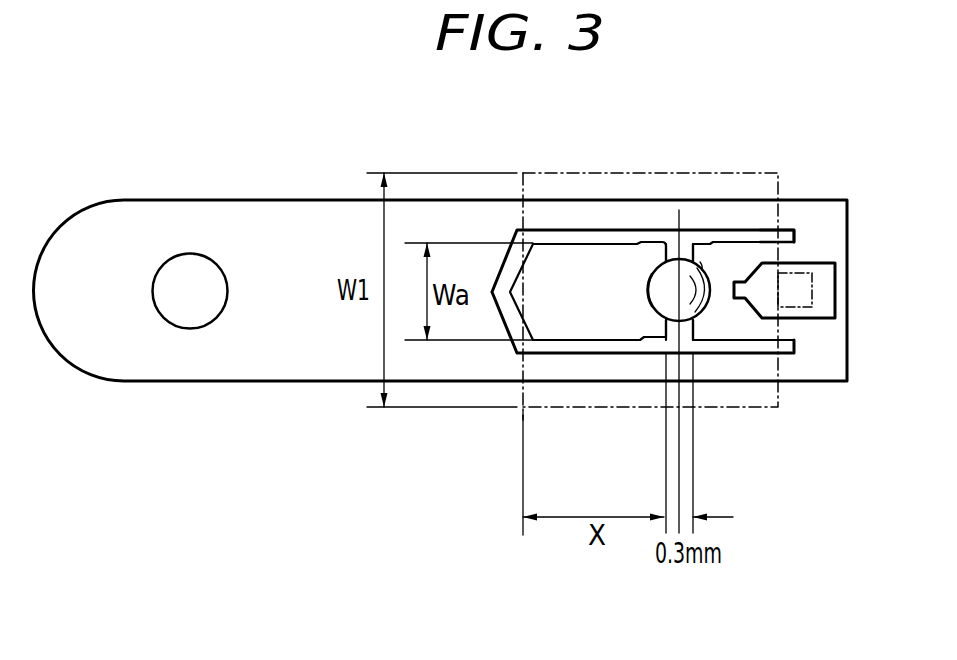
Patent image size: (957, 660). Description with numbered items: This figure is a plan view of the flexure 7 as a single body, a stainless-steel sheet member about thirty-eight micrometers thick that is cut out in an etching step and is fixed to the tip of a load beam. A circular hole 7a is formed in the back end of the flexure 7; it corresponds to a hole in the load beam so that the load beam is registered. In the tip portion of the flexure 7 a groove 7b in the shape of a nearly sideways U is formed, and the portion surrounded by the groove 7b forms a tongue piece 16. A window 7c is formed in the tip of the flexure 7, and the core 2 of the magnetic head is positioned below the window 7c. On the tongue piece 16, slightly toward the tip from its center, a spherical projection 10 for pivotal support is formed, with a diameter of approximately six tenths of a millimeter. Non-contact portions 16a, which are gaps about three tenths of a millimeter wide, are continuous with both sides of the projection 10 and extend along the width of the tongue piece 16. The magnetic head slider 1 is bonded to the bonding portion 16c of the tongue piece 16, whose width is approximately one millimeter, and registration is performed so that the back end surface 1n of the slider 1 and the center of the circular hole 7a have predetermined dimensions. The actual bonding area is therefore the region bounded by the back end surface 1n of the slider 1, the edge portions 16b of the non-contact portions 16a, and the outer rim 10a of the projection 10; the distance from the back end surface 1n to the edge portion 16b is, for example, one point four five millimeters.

The slider 1 is at (555, 163).
The back end surface of the slider 1n is at (520, 190).
The core 2 is at (812, 298).
The flexure 7 is at (293, 190).
The circular hole 7a is at (190, 320).
The groove 7b is at (762, 237).
The window 7c is at (828, 270).
The spherical projection 10 is at (695, 277).
The outer rim of the projection 10a is at (648, 275).
The tongue piece 16 is at (511, 315).
The non-contact portions 16a is at (693, 247).
The edge portions of the non-contact portions 16b is at (654, 243).
The bonding portion 16c is at (561, 322).